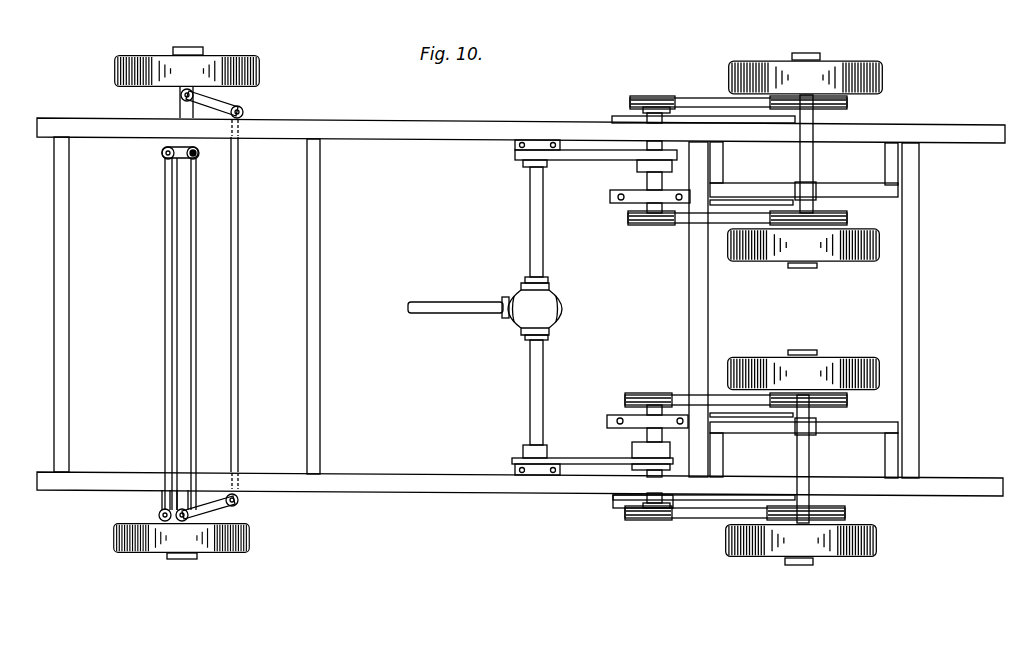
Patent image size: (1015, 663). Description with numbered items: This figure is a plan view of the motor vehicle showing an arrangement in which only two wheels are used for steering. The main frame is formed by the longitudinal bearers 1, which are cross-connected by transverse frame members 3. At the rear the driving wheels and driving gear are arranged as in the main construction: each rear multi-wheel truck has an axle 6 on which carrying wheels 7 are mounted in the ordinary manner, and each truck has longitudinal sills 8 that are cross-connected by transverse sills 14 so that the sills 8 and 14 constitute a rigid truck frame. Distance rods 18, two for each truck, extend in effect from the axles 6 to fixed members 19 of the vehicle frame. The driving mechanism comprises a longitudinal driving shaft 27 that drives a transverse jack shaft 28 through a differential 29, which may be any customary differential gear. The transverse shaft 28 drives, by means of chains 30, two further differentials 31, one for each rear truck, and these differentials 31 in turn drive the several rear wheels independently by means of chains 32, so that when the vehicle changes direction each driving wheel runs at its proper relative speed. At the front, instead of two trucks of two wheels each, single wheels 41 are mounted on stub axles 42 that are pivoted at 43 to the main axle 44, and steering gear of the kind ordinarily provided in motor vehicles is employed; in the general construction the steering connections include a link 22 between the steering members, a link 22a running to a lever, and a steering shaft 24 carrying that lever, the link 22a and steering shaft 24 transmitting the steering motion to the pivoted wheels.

The longitudinal bearers 1 is at (402, 124).
The transverse frame members 3 is at (708, 335).
The axle 6 is at (813, 162).
The carrying wheels 7 is at (742, 61).
The longitudinal sills 8 is at (872, 197).
The transverse sills 14 is at (891, 456).
The distance rods 18 is at (752, 123).
The fixed members 19 is at (625, 500).
The link 22 is at (238, 316).
The link 22a is at (166, 275).
The steering shaft 24 is at (198, 158).
The longitudinal driving shaft 27 is at (452, 312).
The transverse jack shaft 28 is at (544, 252).
The differential 29 is at (548, 314).
The chains 30 is at (596, 161).
The differentials 31 is at (640, 150).
The chains 32 is at (703, 98).
The single wheels 41 is at (107, 72).
The stub axles 42 is at (181, 91).
The pivot 43 is at (184, 100).
The main axle 44 is at (188, 206).